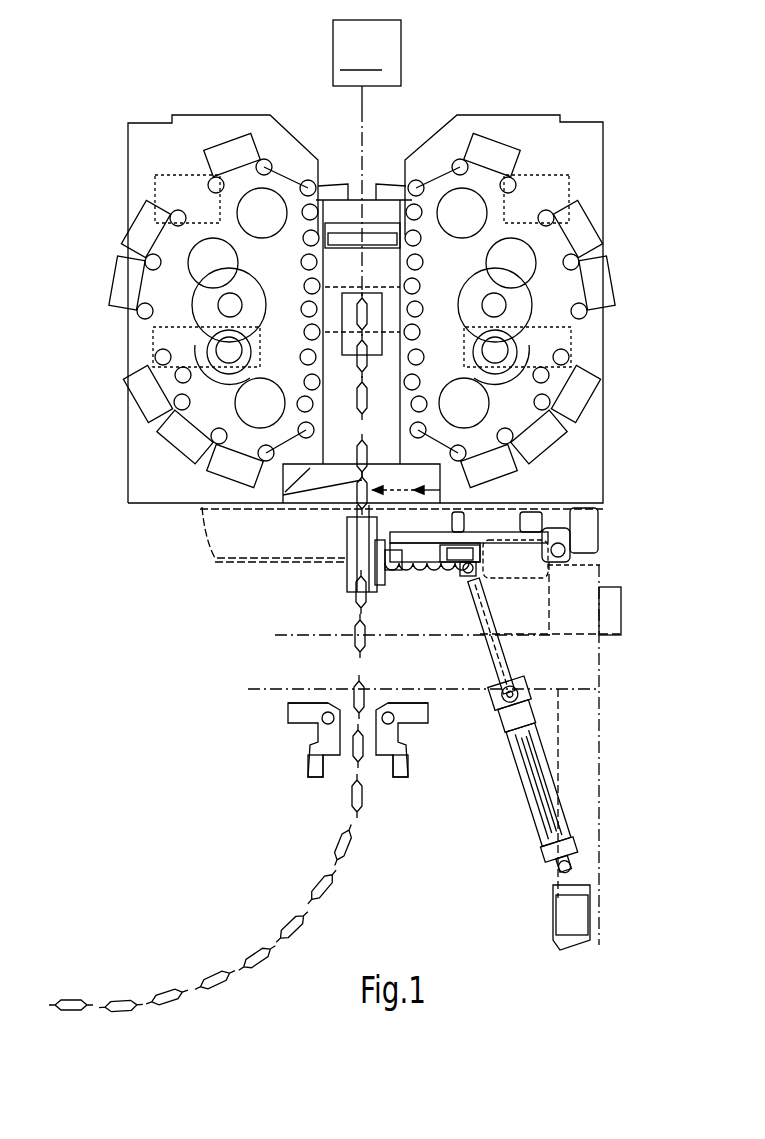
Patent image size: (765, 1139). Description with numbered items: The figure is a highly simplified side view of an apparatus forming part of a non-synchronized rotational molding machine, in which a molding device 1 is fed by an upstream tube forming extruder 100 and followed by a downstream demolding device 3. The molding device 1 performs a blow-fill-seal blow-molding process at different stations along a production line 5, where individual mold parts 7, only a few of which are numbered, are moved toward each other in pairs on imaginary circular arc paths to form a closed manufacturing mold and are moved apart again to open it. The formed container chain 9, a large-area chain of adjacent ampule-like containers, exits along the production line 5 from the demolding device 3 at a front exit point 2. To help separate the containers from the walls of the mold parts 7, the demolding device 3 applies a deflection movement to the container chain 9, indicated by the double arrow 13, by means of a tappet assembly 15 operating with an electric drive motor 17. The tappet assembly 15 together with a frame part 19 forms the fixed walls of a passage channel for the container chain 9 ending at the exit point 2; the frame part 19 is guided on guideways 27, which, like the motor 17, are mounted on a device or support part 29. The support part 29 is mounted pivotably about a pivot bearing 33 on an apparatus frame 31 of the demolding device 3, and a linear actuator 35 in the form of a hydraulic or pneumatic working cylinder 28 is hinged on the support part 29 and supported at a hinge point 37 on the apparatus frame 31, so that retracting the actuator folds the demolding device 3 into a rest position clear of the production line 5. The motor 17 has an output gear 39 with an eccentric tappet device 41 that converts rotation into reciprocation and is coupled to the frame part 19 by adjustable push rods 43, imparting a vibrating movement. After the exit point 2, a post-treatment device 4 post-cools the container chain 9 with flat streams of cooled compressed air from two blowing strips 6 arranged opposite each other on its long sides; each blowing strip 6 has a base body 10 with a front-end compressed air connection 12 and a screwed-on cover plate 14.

The tube forming extruder 100 is at (367, 64).
The molding device 1 is at (613, 197).
The front exit point 2 is at (357, 590).
The demolding device 3 is at (235, 625).
The post-treatment device 4 is at (275, 755).
The production line 5 is at (370, 124).
The blowing strip 6 is at (310, 777).
The mold parts 7 is at (350, 315).
The container chain 9 is at (283, 497).
The base body 10 is at (318, 727).
The compressed air connection 12 is at (328, 712).
The double arrow 13 is at (445, 507).
The cover plate 14 is at (298, 703).
The tappet assembly 15 is at (347, 575).
The electric drive motor 17 is at (540, 564).
The frame part 19 is at (347, 539).
The guideways 27 is at (412, 578).
The working cylinder 28 is at (480, 575).
The device or support part 29 is at (575, 520).
The apparatus frame 31 is at (600, 662).
The pivot bearing 33 is at (600, 550).
The linear actuator 35 is at (505, 718).
The hinge point 37 is at (558, 878).
The output gear 39 is at (443, 578).
The eccentric tappet device 41 is at (433, 585).
The adjustable push rods 43 is at (357, 592).